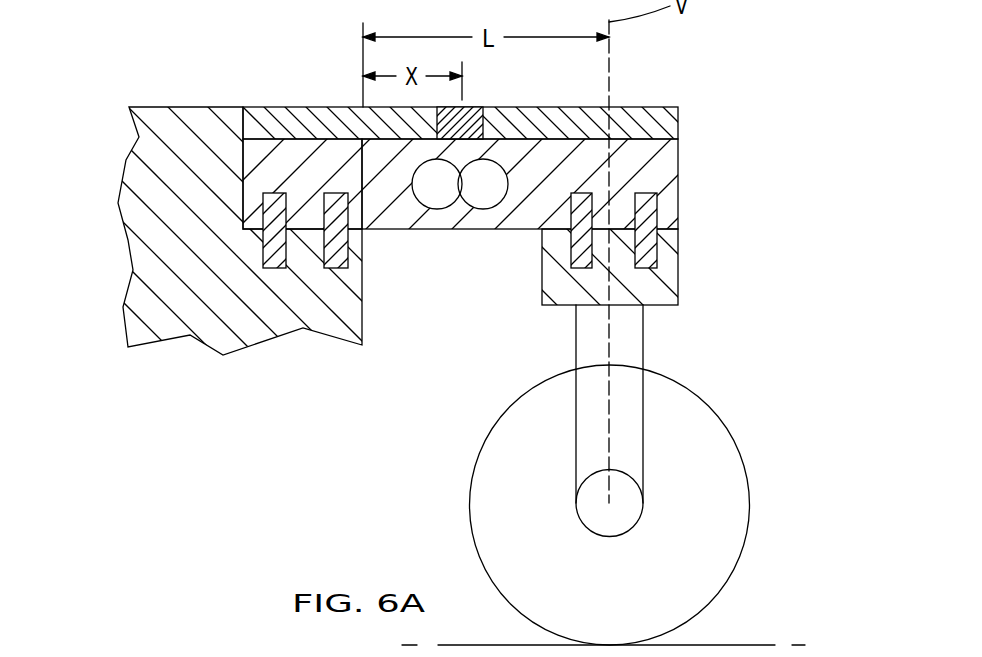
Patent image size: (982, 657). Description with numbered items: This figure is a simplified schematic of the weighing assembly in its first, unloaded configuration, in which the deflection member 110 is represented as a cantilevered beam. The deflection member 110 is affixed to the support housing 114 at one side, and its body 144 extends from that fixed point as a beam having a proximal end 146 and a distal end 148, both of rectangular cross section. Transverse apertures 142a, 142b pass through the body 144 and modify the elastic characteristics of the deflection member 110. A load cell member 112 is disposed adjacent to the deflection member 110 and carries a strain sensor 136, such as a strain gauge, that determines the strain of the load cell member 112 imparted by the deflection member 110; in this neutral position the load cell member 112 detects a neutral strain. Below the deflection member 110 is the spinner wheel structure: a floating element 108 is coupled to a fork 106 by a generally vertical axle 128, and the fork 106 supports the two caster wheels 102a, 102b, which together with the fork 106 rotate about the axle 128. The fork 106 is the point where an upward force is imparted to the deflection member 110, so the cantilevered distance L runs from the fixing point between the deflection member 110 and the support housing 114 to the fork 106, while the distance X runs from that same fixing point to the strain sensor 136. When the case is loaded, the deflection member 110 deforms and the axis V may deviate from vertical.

The caster wheel 102a is at (729, 432).
The caster wheel 102b is at (658, 505).
The fork 106 is at (675, 362).
The floating element 108 is at (677, 262).
The deflection member 110 is at (677, 196).
The load cell member 112 is at (677, 124).
The support housing 114 is at (130, 255).
The axle 128 is at (692, 320).
The strain sensor 136 is at (472, 107).
The transverse aperture 142a is at (438, 182).
The transverse aperture 142b is at (480, 183).
The body 144 is at (463, 242).
The proximal end 146 is at (692, 165).
The distal end 148 is at (240, 155).